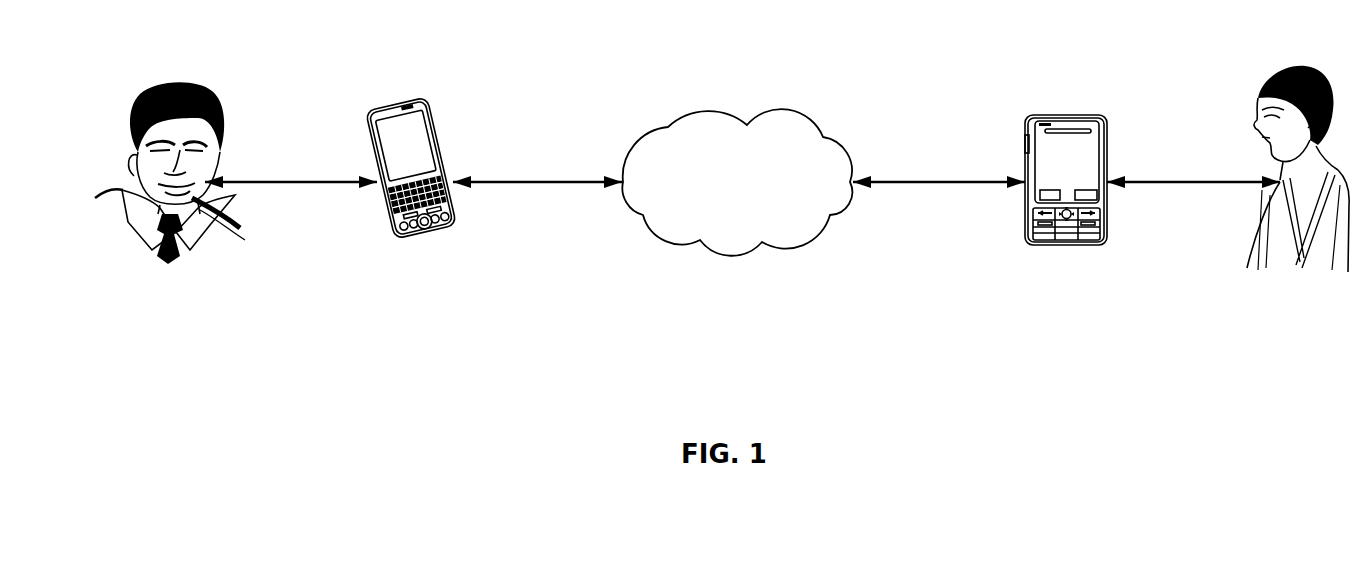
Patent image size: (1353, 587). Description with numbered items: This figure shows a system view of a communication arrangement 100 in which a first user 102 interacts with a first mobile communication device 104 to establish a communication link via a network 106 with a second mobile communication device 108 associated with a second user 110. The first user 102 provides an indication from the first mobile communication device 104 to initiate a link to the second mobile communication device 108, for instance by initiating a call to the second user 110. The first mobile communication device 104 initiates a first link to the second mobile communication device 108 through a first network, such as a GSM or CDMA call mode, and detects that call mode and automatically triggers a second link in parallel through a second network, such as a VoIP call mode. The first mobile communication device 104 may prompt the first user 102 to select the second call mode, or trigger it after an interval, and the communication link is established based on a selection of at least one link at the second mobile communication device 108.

The communication system 100 is at (937, 345).
The first user 102 is at (240, 228).
The first mobile communication device 104 is at (427, 243).
The network 106 is at (718, 207).
The second mobile communication device 108 is at (1067, 245).
The second user 110 is at (1303, 270).